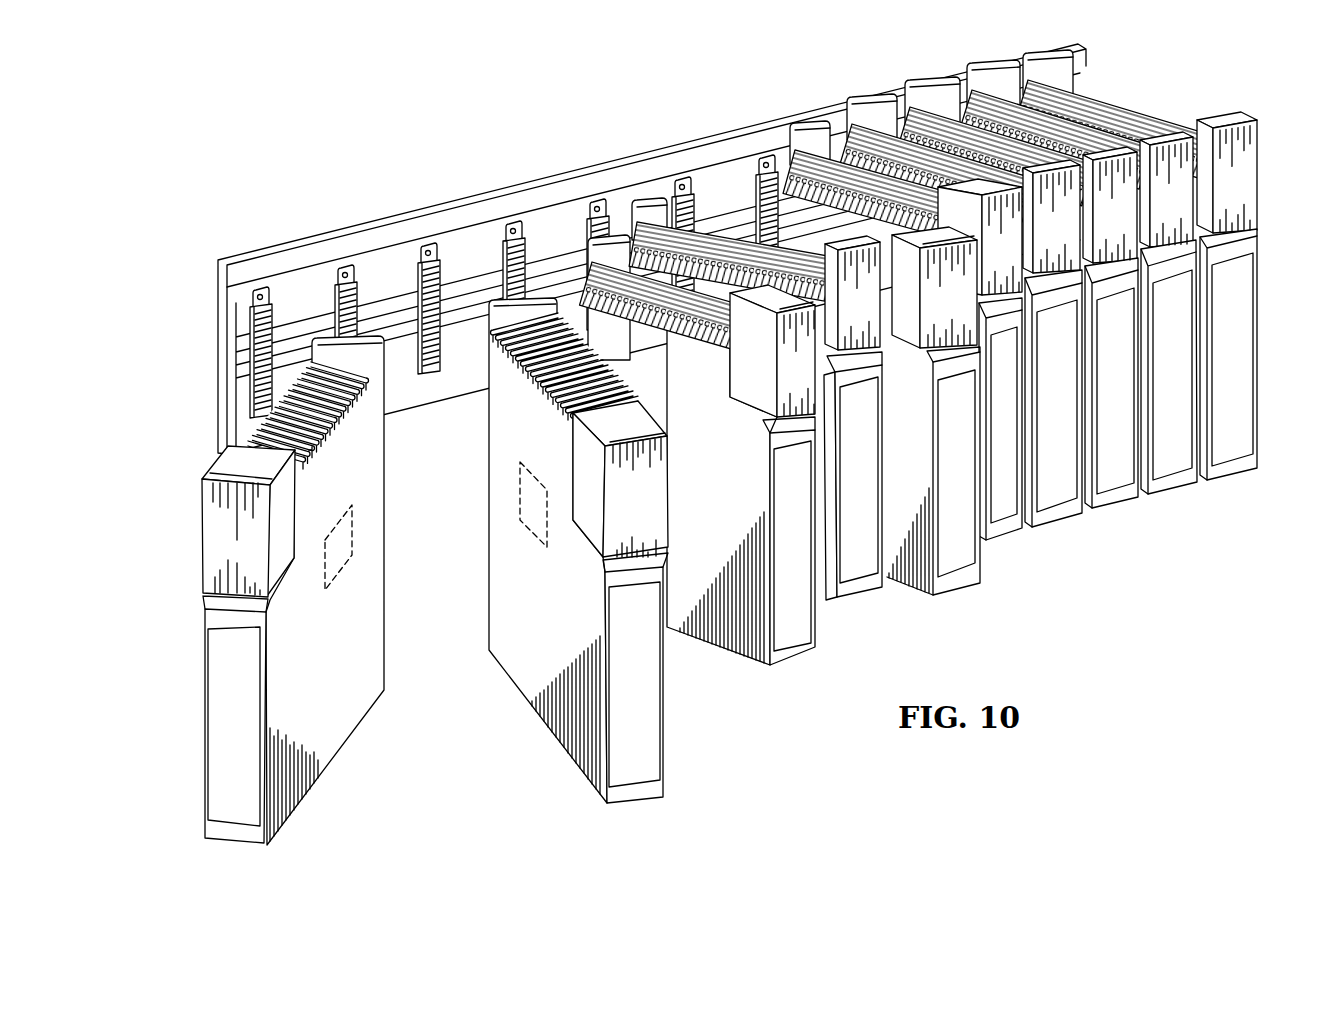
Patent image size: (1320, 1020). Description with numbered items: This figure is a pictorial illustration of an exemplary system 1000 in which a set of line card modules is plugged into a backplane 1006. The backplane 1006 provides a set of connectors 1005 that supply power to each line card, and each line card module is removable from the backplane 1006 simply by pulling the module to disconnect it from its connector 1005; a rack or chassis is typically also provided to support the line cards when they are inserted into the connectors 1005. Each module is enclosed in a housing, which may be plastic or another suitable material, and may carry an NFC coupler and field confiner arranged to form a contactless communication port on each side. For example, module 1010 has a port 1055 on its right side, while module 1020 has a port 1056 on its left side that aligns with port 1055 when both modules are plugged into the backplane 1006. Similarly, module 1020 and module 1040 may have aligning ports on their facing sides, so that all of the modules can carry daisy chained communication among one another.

The system 1000 is at (509, 100).
The connectors 1005 is at (343, 263).
The backplane 1006 is at (627, 157).
The module 1010 is at (203, 529).
The module 1020 is at (653, 738).
The module 1040 is at (806, 622).
The port 1055 is at (342, 578).
The port 1056 is at (535, 525).